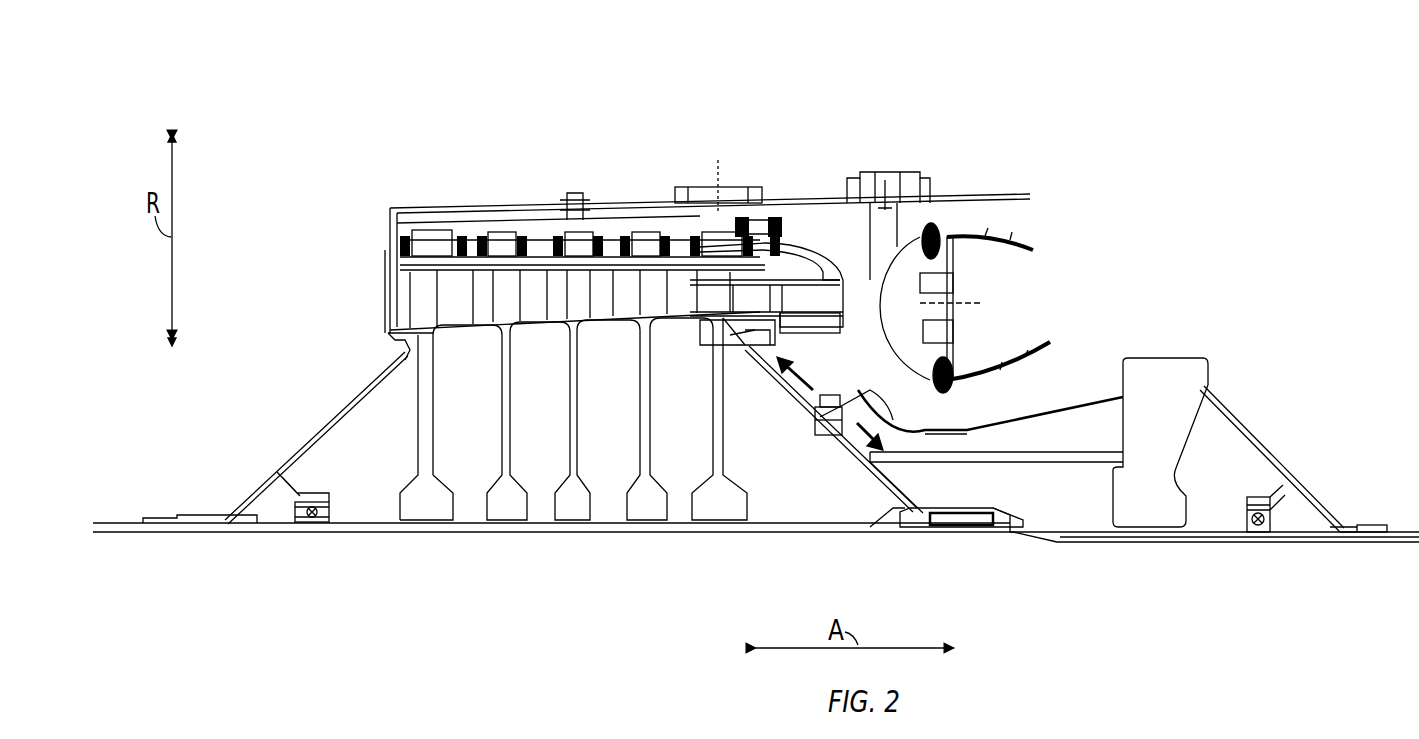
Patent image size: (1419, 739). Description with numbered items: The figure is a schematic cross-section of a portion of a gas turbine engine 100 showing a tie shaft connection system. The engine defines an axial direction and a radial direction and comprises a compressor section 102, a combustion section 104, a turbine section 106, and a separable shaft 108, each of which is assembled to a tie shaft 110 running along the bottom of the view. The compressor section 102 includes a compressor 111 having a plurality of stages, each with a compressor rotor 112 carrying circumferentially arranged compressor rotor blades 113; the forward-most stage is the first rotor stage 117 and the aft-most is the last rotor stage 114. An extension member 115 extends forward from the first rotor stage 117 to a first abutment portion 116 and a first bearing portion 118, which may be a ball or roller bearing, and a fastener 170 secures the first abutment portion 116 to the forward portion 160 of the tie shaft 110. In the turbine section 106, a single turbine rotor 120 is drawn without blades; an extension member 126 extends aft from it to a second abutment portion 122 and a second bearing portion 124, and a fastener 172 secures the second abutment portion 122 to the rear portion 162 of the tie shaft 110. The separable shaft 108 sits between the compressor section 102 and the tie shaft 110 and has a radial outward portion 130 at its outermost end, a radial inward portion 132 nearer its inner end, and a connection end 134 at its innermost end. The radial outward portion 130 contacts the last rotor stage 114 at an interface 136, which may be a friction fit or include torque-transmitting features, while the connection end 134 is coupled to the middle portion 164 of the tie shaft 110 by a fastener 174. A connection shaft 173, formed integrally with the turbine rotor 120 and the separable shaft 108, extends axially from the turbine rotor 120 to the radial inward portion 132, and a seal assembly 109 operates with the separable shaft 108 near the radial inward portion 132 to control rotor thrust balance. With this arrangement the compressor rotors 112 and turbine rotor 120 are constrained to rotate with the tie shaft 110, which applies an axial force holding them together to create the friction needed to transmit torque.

The gas turbine engine 100 is at (1193, 122).
The compressor section 102 is at (325, 157).
The combustion section 104 is at (1046, 256).
The turbine section 106 is at (1283, 328).
The separable shaft 108 is at (782, 400).
The seal assembly 109 is at (848, 432).
The tie shaft 110 is at (1075, 545).
The compressor 111 is at (355, 264).
The compressor rotor 112 is at (455, 380).
The compressor rotor blades 113 is at (508, 295).
The last rotor stage 114 is at (697, 300).
The extension member 115 is at (315, 425).
The first abutment portion 116 is at (205, 515).
The first rotor stage 117 is at (427, 337).
The first bearing portion 118 is at (318, 515).
The turbine rotor 120 is at (1195, 343).
The second abutment portion 122 is at (1347, 527).
The second bearing portion 124 is at (1250, 515).
The extension member 126 is at (1250, 432).
The radial outward portion 130 is at (755, 280).
The radial inward portion 132 is at (860, 458).
The connection end 134 is at (918, 508).
The interface 136 is at (710, 355).
The forward portion 160 is at (122, 544).
The rear portion 162 is at (1355, 548).
The middle portion 164 is at (935, 570).
The fastener 170 is at (145, 520).
The fastener 172 is at (1377, 527).
The connection shaft 173 is at (1070, 452).
The fastener 174 is at (987, 508).